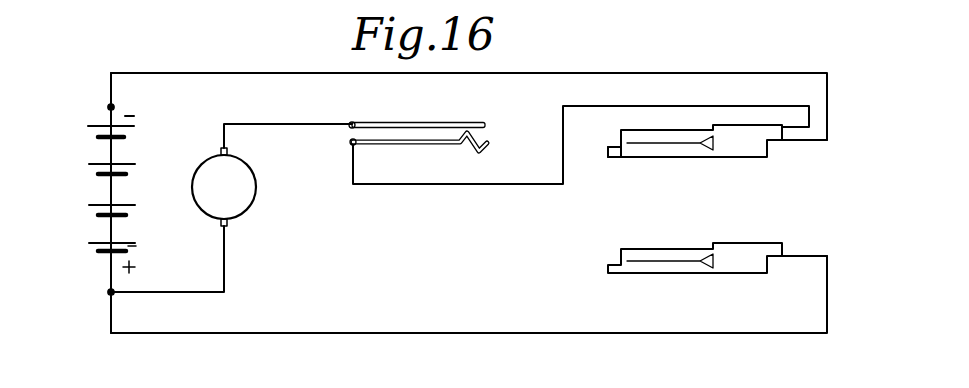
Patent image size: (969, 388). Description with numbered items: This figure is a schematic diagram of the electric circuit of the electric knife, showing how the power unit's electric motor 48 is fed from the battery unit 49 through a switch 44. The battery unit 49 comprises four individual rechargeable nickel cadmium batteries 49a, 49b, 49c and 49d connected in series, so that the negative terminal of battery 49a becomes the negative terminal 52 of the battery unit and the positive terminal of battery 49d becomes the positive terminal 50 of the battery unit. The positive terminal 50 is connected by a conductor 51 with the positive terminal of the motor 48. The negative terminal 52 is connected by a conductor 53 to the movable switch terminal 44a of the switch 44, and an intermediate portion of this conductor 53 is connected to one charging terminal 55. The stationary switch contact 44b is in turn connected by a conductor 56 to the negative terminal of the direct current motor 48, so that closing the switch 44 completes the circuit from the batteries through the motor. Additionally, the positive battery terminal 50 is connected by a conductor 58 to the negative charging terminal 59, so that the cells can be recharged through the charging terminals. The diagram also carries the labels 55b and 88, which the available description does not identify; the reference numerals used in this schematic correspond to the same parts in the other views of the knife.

The switch 44 is at (441, 132).
The movable switch terminal 44a is at (381, 147).
The stationary switch contact 44b is at (477, 122).
The electric motor 48 is at (250, 205).
The battery unit 49 is at (101, 193).
The battery 49a is at (135, 134).
The battery 49b is at (135, 176).
The battery 49c is at (135, 216).
The battery 49d is at (138, 250).
The positive terminal 50 is at (111, 292).
The conductor 51 is at (172, 294).
The negative terminal 52 is at (111, 107).
The conductor 53 is at (318, 73).
The charging terminal 55 is at (690, 216).
The solenoid terminal 55b is at (612, 160).
The conductor 56 is at (321, 124).
The conductor 58 is at (516, 334).
The negative charging terminal 59 is at (690, 249).
The motor brush 88 is at (229, 151).